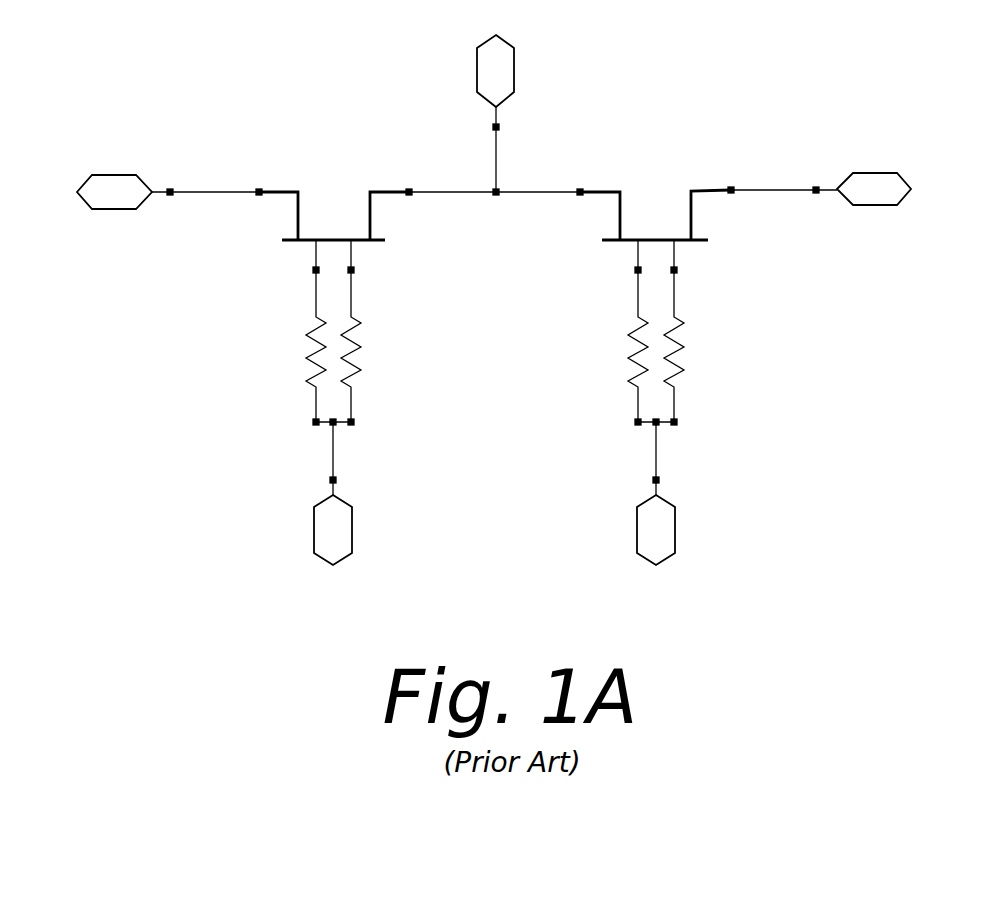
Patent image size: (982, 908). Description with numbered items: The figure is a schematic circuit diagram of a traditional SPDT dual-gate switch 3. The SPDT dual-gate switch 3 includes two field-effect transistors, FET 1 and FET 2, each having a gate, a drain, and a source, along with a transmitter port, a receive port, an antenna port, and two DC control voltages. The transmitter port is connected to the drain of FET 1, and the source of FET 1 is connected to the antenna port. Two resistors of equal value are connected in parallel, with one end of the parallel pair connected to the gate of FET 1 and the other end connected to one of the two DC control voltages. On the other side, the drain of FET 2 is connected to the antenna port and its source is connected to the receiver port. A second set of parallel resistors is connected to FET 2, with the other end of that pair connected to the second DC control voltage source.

The FET 1 is at (331, 213).
The FET 2 is at (653, 208).
The SPDT dual-gate switch 3 is at (149, 86).